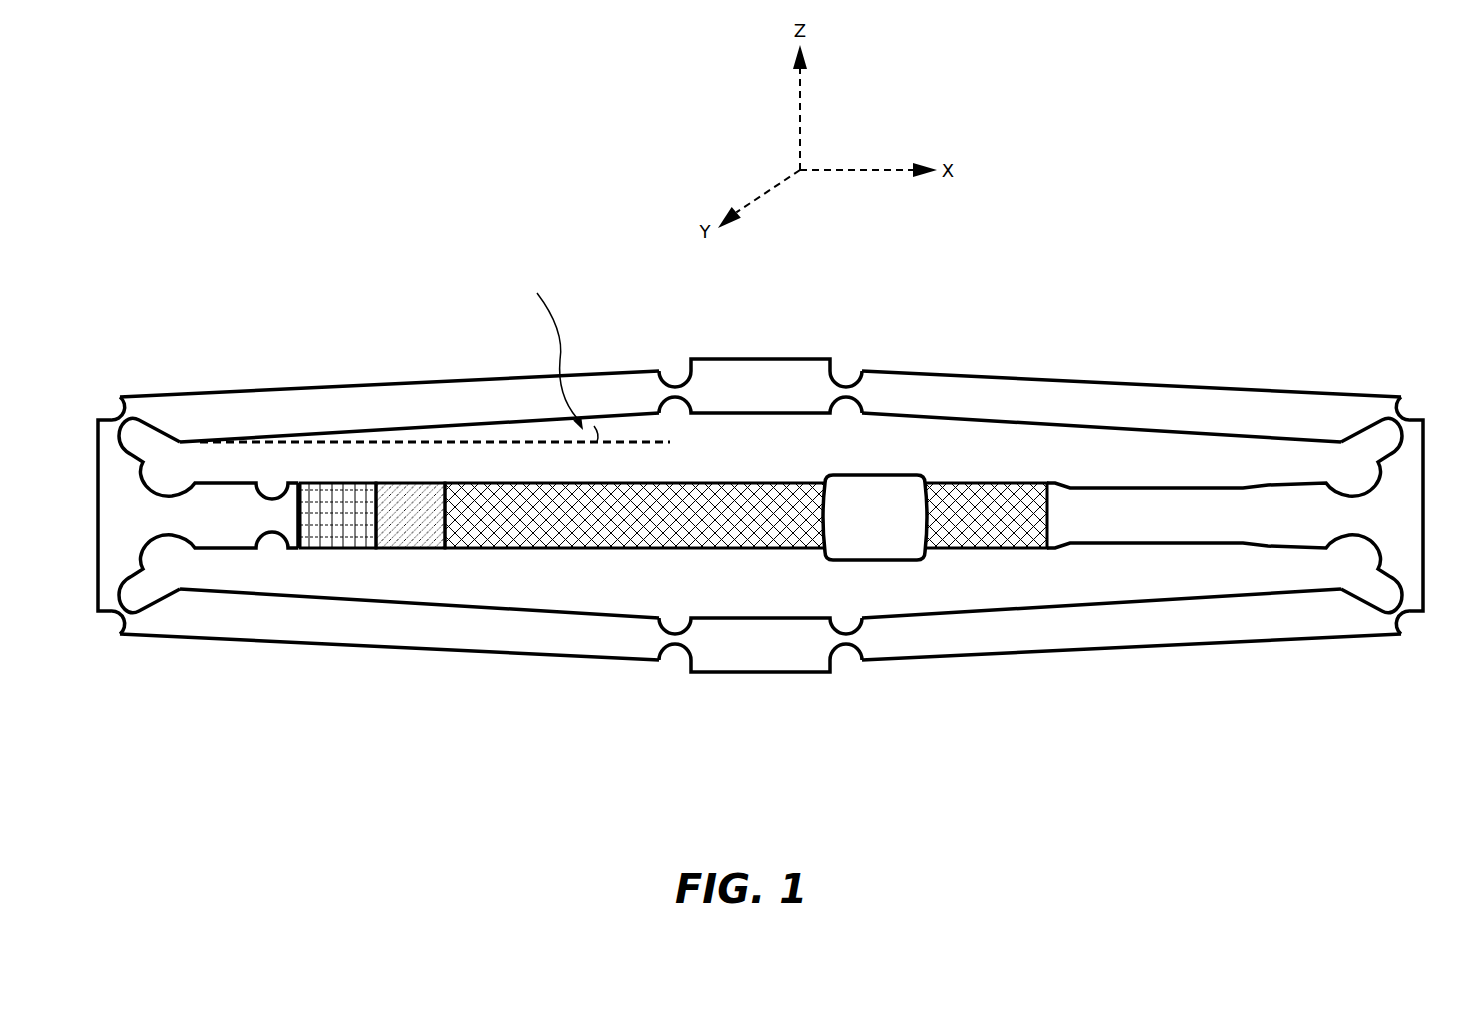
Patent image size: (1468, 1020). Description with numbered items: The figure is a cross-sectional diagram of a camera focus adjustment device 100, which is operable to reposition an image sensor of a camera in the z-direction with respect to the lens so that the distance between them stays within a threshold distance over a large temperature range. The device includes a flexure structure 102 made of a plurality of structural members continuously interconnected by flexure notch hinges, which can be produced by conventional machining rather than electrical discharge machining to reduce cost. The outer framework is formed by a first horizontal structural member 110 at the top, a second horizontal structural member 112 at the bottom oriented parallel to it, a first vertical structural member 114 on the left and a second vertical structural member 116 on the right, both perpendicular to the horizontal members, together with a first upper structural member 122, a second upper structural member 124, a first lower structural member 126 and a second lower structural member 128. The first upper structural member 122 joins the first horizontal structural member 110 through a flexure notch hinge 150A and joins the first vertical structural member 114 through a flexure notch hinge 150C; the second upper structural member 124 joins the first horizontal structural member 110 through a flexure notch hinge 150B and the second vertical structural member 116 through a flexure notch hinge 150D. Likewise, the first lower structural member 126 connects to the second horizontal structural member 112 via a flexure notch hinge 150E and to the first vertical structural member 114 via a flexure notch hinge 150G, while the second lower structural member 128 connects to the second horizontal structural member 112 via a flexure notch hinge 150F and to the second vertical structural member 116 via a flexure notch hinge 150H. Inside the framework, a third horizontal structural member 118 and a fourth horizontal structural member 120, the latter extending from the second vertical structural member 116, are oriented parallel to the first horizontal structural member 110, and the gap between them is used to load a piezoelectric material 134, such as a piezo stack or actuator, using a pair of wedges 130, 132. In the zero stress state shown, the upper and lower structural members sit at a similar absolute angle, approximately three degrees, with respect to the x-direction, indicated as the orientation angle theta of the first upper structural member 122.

The camera focus adjustment device 100 is at (1176, 130).
The flexure structure 102 is at (397, 380).
The first horizontal structural member 110 is at (718, 372).
The second horizontal structural member 112 is at (751, 657).
The first vertical structural member 114 is at (107, 535).
The second vertical structural member 116 is at (1406, 558).
The third horizontal structural member 118 is at (231, 534).
The fourth horizontal structural member 120 is at (1231, 534).
The first upper structural member 122 is at (264, 402).
The second upper structural member 124 is at (1100, 401).
The first lower structural member 126 is at (352, 637).
The second lower structural member 128 is at (1124, 641).
The wedge 130 is at (338, 548).
The wedge 132 is at (427, 548).
The piezoelectric material 134 is at (787, 483).
The flexure notch hinge 150A is at (677, 361).
The flexure notch hinge 150B is at (844, 360).
The flexure notch hinge 150C is at (116, 397).
The flexure notch hinge 150D is at (1406, 396).
The flexure notch hinge 150E is at (671, 680).
The flexure notch hinge 150F is at (852, 680).
The flexure notch hinge 150G is at (115, 634).
The flexure notch hinge 150H is at (1402, 644).